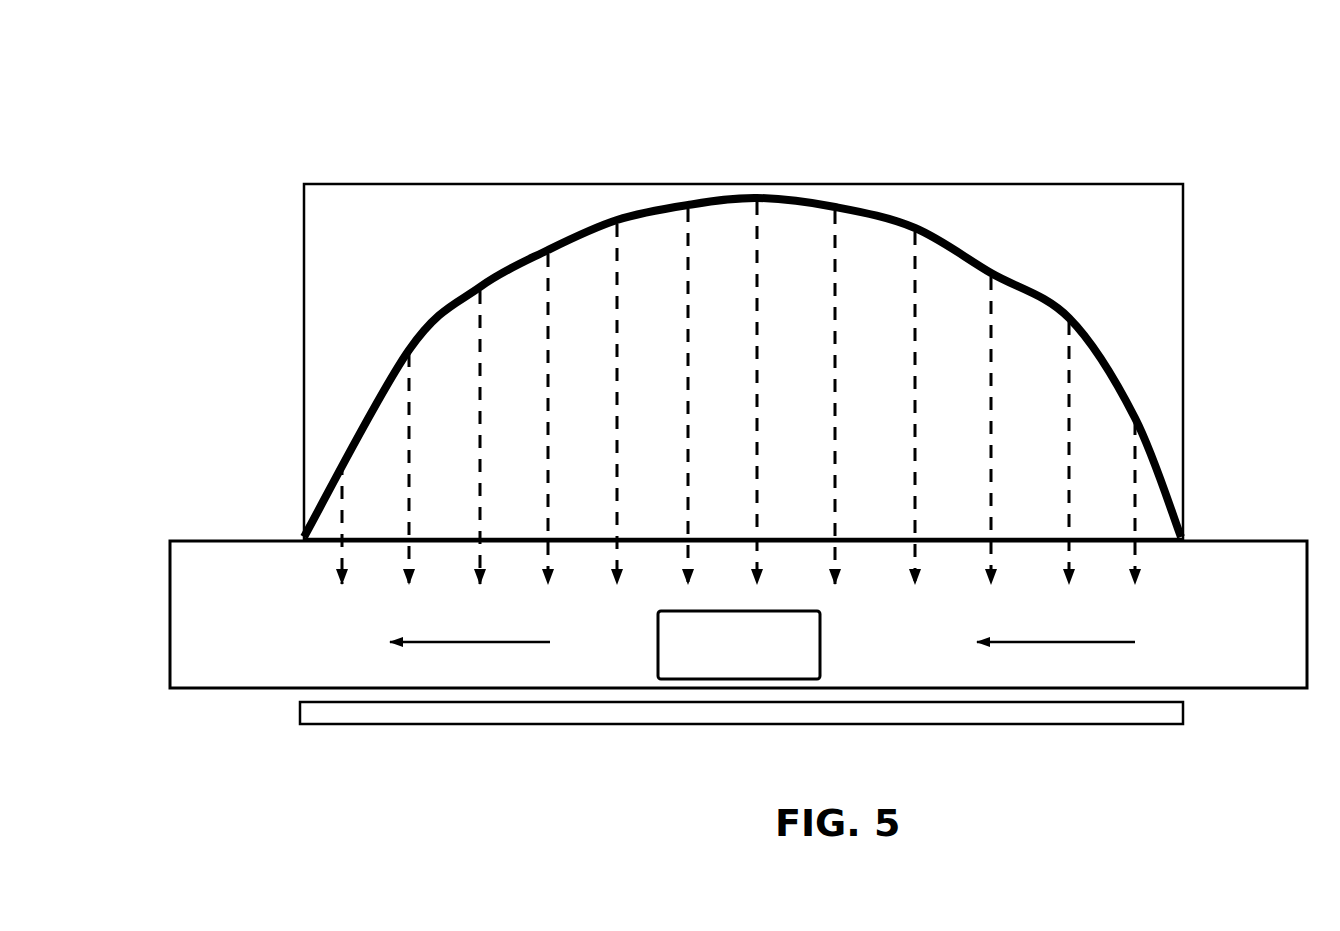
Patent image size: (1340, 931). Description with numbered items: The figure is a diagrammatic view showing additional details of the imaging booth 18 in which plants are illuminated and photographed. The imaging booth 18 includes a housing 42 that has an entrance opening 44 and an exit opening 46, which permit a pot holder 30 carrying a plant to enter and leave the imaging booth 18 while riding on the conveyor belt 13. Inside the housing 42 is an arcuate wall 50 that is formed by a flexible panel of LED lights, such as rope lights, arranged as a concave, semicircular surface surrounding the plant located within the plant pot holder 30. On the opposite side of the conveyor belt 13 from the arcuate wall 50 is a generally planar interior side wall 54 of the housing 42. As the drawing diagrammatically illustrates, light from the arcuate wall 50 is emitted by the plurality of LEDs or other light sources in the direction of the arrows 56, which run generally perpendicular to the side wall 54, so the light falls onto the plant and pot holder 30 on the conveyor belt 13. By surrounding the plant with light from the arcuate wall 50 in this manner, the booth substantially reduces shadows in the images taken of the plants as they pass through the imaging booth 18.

The conveyor belt 13 is at (210, 593).
The imaging booth 18 is at (1209, 241).
The pot holder 30 is at (824, 661).
The housing 42 is at (437, 180).
The entrance opening 44 is at (1167, 614).
The exit opening 46 is at (295, 613).
The arcuate wall 50 is at (964, 240).
The interior side wall 54 is at (573, 706).
The arrows 56 is at (914, 412).